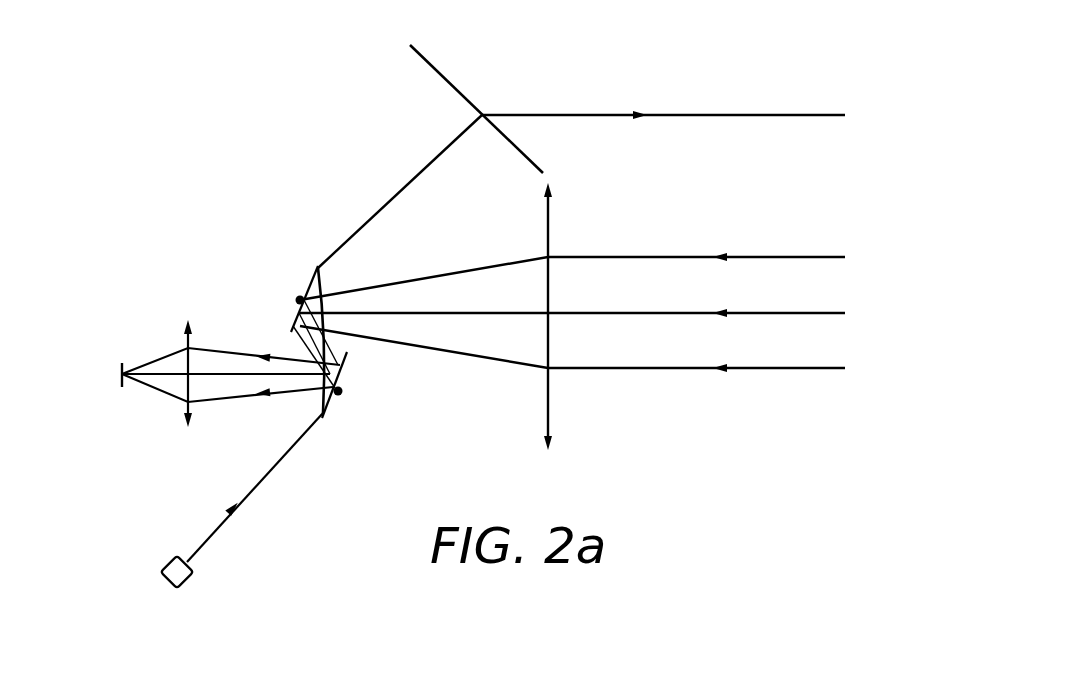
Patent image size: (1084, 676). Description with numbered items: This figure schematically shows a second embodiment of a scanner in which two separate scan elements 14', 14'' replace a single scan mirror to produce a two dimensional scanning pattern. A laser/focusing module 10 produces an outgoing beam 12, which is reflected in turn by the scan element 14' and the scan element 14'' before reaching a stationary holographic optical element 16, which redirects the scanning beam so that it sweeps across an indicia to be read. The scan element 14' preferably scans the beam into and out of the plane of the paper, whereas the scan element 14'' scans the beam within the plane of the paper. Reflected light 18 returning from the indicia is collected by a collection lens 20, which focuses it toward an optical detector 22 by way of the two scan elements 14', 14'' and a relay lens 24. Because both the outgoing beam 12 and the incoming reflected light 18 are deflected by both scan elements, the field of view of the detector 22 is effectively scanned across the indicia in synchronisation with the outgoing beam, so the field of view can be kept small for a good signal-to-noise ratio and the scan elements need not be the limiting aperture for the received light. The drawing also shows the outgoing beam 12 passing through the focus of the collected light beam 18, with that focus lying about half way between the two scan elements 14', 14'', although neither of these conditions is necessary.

The laser/focusing module 10 is at (168, 557).
The beam 12 is at (213, 535).
The scan element 14' is at (365, 418).
The scan element 14'' is at (330, 255).
The holographic optical element 16 is at (440, 72).
The reflected light 18 is at (657, 257).
The collection lens 20 is at (548, 392).
The optical detector 22 is at (113, 367).
The relay lens 24 is at (182, 361).